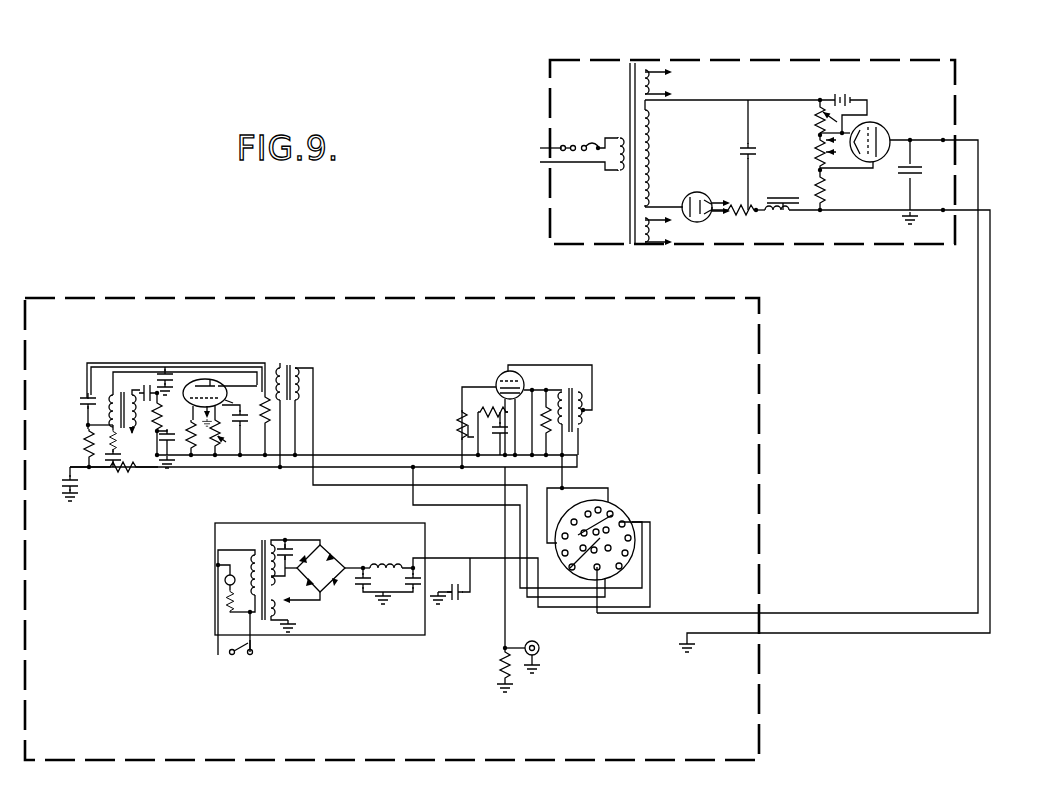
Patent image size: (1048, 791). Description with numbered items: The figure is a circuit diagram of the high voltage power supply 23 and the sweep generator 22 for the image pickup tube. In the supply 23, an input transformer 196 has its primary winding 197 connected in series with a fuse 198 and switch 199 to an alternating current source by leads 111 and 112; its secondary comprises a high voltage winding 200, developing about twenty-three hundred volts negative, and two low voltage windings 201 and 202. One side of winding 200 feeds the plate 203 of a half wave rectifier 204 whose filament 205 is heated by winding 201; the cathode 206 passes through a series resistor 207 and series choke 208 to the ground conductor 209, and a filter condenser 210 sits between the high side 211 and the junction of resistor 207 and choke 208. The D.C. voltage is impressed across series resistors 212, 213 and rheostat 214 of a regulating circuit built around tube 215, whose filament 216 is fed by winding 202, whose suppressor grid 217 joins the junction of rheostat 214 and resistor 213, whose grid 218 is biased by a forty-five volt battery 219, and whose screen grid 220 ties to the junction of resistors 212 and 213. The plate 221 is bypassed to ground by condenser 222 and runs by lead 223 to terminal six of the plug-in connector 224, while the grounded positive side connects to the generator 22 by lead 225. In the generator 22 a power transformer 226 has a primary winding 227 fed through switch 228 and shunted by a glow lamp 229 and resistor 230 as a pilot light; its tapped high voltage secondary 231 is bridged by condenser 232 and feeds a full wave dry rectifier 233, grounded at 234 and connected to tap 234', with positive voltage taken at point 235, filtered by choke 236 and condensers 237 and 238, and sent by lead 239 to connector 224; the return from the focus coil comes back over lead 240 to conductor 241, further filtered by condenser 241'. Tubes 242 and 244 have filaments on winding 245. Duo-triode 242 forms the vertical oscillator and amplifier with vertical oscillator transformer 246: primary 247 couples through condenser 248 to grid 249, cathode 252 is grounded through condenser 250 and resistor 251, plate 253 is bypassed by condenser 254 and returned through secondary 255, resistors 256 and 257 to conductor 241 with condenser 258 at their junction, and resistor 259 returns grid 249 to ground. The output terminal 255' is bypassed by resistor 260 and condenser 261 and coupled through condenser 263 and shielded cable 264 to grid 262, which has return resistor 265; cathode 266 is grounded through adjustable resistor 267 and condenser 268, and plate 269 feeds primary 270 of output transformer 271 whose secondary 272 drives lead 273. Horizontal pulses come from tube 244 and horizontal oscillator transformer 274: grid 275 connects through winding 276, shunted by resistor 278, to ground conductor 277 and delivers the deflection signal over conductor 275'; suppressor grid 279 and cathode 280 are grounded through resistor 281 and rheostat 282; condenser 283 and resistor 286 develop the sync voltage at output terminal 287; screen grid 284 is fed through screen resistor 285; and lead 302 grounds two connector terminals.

The sweep generator 22 is at (224, 308).
The high voltage power supply 23 is at (858, 250).
The lead 111 is at (542, 148).
The lead 112 is at (544, 162).
The input transformer 196 is at (629, 219).
The primary winding 197 is at (622, 174).
The fuse 198 is at (590, 144).
The switch 199 is at (565, 144).
The high voltage winding 200 is at (648, 140).
The low voltage winding 201 is at (666, 90).
The low voltage filament winding 202 is at (666, 230).
The plate 203 is at (688, 202).
The half wave rectifier 204 is at (700, 191).
The filament 205 is at (716, 195).
The cathode 206 is at (712, 205).
The series resistor 207 is at (746, 213).
The series choke 208 is at (779, 214).
The ground conductor 209 is at (871, 208).
The filter condenser 210 is at (754, 150).
The high side lead 211 is at (724, 100).
The resistor 212 is at (818, 188).
The resistor 213 is at (818, 156).
The rheostat 214 is at (817, 117).
The regulator tube 215 is at (883, 131).
The filament 216 is at (840, 157).
The suppressor grid 217 is at (881, 123).
The grid 218 is at (876, 124).
The battery 219 is at (847, 95).
The screen grid 220 is at (875, 164).
The plate 221 is at (900, 140).
The condenser 222 is at (915, 168).
The lead 223 is at (978, 166).
The plug-in connector 224 is at (616, 520).
The lead 225 is at (988, 216).
The power transformer 226 is at (262, 541).
The primary winding 227 is at (218, 549).
The switch 228 is at (243, 656).
The glow lamp 229 is at (218, 582).
The resistor 230 is at (224, 602).
The high voltage secondary 231 is at (273, 543).
The condenser 232 is at (287, 545).
The full wave dry rectifier 233 is at (338, 555).
The ground point 234 is at (311, 554).
The tap 234' is at (313, 602).
The positive supply point 235 is at (363, 567).
The series choke 236 is at (392, 567).
The condenser 237 is at (378, 602).
The condenser 238 is at (411, 600).
The lead 239 is at (461, 557).
The lead 240 is at (652, 546).
The conductor 241 is at (347, 458).
The condenser 241' is at (453, 597).
The duo-triode tube 242 is at (220, 381).
The oscillator tube 244 is at (505, 371).
The filament winding 245 is at (294, 618).
The vertical oscillator transformer 246 is at (122, 395).
The primary 247 is at (121, 454).
The condenser 248 is at (147, 385).
The grid 249 is at (158, 401).
The condenser 250 is at (167, 470).
The resistor 251 is at (191, 458).
The cathode 252 is at (200, 418).
The plate 253 is at (201, 379).
The condenser 254 is at (164, 367).
The secondary 255 is at (114, 383).
The output terminal 255' is at (76, 418).
The resistor 256 is at (86, 442).
The resistor 257 is at (122, 474).
The condenser 258 is at (64, 487).
The resistor 259 is at (193, 402).
The resistor 260 is at (106, 442).
The condenser 261 is at (113, 464).
The grid 262 is at (226, 387).
The coupling condenser 263 is at (80, 399).
The shielded cable 264 is at (87, 352).
The resistor 265 is at (265, 393).
The cathode 266 is at (240, 416).
The adjustable resistor 267 is at (215, 456).
The condenser 268 is at (216, 446).
The plate 269 is at (211, 379).
The primary 270 is at (282, 365).
The output transformer 271 is at (295, 365).
The secondary 272 is at (313, 368).
The lead 273 is at (315, 434).
The horizontal oscillator transformer 274 is at (591, 363).
The grid 275 is at (528, 389).
The conductor 275' is at (571, 590).
The winding 276 is at (565, 392).
The ground conductor 277 is at (580, 455).
The resistor 278 is at (546, 403).
The suppressor grid 279 is at (496, 380).
The cathode 280 is at (475, 398).
The resistor 281 is at (478, 413).
The rheostat 282 is at (468, 438).
The condenser 283 is at (488, 466).
The screen grid 284 is at (532, 388).
The screen resistor 285 is at (458, 428).
The resistor 286 is at (498, 671).
The output terminal 287 is at (540, 647).
The lead 302 is at (610, 482).